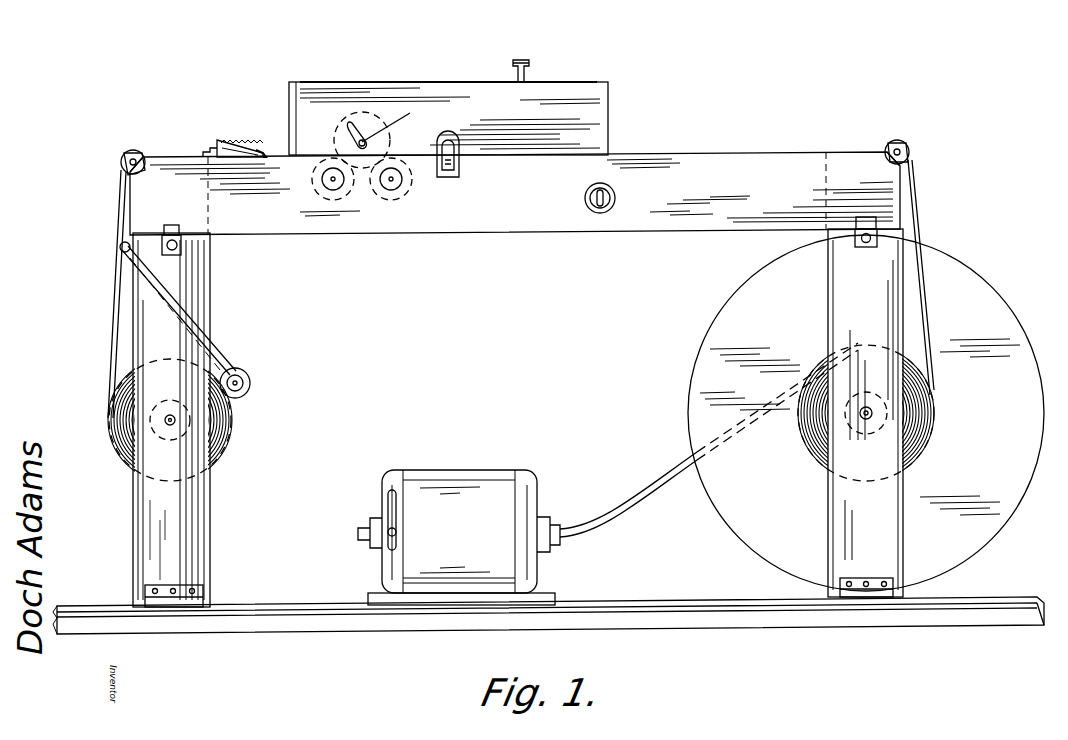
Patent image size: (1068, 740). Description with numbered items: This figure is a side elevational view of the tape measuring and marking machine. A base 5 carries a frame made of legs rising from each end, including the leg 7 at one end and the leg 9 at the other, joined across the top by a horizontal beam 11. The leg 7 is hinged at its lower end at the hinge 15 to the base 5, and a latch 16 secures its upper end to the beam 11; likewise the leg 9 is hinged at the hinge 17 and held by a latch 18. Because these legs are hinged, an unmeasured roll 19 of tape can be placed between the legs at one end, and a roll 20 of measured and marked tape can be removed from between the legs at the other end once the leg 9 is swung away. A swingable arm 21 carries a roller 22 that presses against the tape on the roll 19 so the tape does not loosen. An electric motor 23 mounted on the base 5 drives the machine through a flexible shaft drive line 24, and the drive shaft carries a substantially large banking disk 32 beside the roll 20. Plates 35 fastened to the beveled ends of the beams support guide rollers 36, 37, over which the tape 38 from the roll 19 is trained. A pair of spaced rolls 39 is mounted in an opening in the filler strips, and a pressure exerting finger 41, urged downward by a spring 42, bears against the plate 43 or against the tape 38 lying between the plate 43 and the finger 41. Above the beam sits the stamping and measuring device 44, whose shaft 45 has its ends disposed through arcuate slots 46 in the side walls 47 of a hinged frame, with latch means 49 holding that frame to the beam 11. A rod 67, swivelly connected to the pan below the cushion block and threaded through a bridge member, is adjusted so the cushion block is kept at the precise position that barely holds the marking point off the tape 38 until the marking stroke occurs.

The base 5 is at (337, 636).
The leg member 7 is at (197, 513).
The leg 9 is at (838, 510).
The horizontal beam 11 is at (502, 220).
The hinge 15 is at (204, 590).
The latch 16 is at (173, 226).
The hinge 17 is at (875, 578).
The latch 18 is at (860, 216).
The unmeasured roll of tape 19 is at (186, 430).
The roll of measured and marked tape 20 is at (908, 448).
The swingable arm 21 is at (226, 358).
The roller 22 is at (252, 381).
The electric motor 23 is at (475, 480).
The flexible shaft drive line 24 is at (648, 482).
The banking disk 32 is at (707, 343).
The plate 35 is at (128, 176).
The guide roller 36 is at (138, 150).
The guide roller 37 is at (899, 140).
The tape 38 is at (113, 303).
The roll 39 is at (316, 197).
The pressure exerting finger 41 is at (262, 150).
The spring 42 is at (236, 144).
The plate 43 is at (212, 150).
The stamping and measuring device 44 is at (381, 74).
The shaft 45 is at (411, 118).
The arcuate slot 46 is at (368, 124).
The side wall 47 is at (462, 80).
The latch means 49 is at (456, 168).
The rod 67 is at (530, 58).